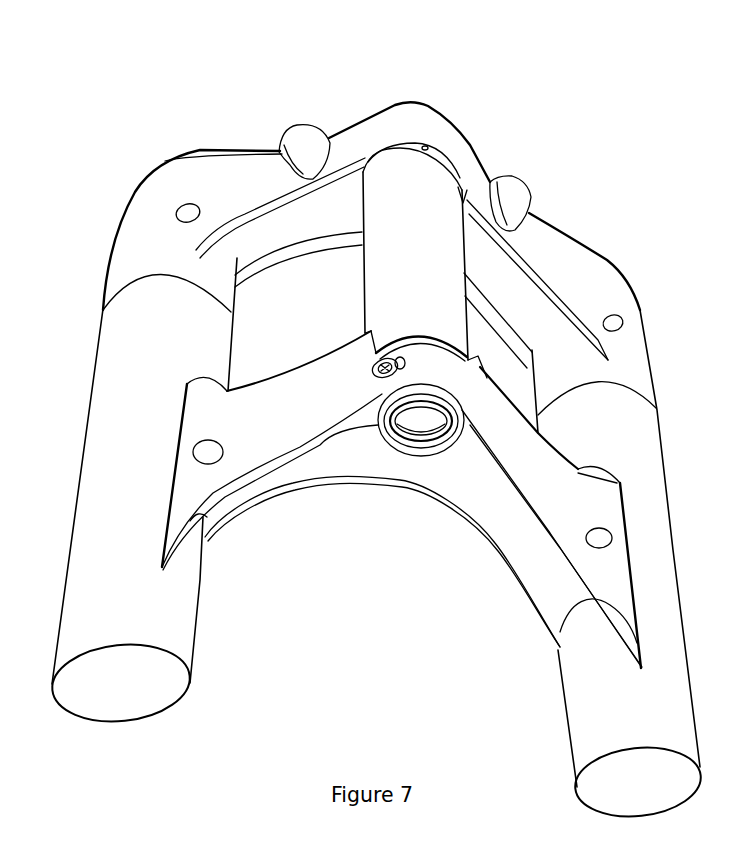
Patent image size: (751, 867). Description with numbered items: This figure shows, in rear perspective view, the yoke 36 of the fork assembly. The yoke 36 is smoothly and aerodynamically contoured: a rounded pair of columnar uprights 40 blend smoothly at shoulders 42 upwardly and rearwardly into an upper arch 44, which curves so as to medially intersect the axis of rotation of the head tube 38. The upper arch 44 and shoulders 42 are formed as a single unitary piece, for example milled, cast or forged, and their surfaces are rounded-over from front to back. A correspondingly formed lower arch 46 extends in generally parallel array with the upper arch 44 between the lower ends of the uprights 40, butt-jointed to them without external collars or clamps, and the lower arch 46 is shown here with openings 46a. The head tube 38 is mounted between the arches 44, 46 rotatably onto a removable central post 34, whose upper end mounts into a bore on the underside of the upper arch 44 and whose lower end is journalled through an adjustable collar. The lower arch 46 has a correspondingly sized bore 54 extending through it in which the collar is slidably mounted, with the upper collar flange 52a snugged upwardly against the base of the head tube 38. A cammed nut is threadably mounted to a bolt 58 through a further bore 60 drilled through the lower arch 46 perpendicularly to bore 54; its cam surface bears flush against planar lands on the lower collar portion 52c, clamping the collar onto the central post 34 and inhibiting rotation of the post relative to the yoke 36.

The central post 34 is at (418, 418).
The yoke 36 is at (529, 152).
The head tube 38 is at (360, 287).
The columnar uprights 40 is at (87, 428).
The shoulders 42 is at (180, 152).
The upper arch 44 is at (413, 103).
The lower arch 46 is at (296, 410).
The arm holes 46a is at (213, 442).
The upper collar flange 52a is at (440, 338).
The lower collar portion 52c is at (405, 435).
The bore 54 is at (445, 445).
The bolt 58 is at (396, 360).
The further bore 60 is at (407, 363).